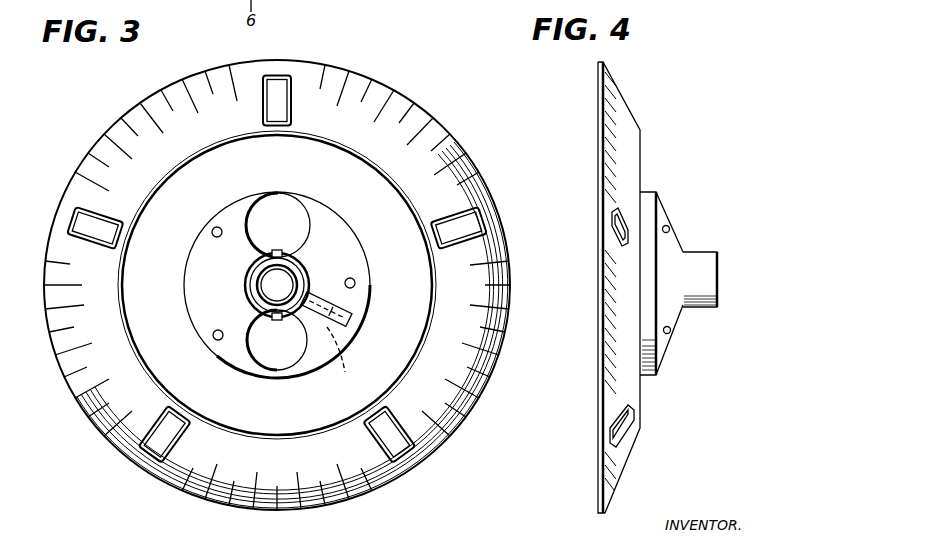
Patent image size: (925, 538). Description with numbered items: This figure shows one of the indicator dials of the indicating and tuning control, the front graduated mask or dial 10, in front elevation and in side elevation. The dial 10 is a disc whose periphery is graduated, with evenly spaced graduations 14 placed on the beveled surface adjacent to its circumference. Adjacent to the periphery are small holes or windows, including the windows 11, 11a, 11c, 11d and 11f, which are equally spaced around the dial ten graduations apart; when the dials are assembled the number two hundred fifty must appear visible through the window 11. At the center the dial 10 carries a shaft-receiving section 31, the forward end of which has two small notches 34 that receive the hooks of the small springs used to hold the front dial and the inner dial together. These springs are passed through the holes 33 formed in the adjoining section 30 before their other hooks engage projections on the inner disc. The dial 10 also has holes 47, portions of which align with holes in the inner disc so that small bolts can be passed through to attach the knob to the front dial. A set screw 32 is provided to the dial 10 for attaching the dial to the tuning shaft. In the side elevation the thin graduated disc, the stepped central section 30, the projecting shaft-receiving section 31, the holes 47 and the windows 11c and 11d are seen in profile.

In FIG. 3, the front graduated mask or dial 10 is at (392, 118).
In FIG. 4, the front graduated mask or dial 10 is at (626, 122).
In FIG. 3, the window 11 is at (292, 96).
In FIG. 3, the window 11a is at (478, 214).
In FIG. 3, the window 11c is at (160, 458).
In FIG. 4, the window 11c is at (634, 428).
In FIG. 3, the window 11d is at (72, 212).
In FIG. 4, the window 11d is at (620, 216).
In FIG. 3, the window 11f is at (438, 450).
In FIG. 3, the graduations 14 is at (455, 170).
In FIG. 3, the plate 30 is at (327, 215).
In FIG. 4, the plate 30 is at (669, 210).
In FIG. 3, the shaft-receiving section 31 is at (304, 276).
In FIG. 4, the shaft-receiving section 31 is at (708, 264).
In FIG. 3, the set screw 32 is at (331, 342).
In FIG. 3, the holes 33 is at (288, 212).
In FIG. 3, the notches 34 is at (277, 253).
In FIG. 3, the holes 47 is at (212, 232).
In FIG. 4, the holes 47 is at (671, 228).